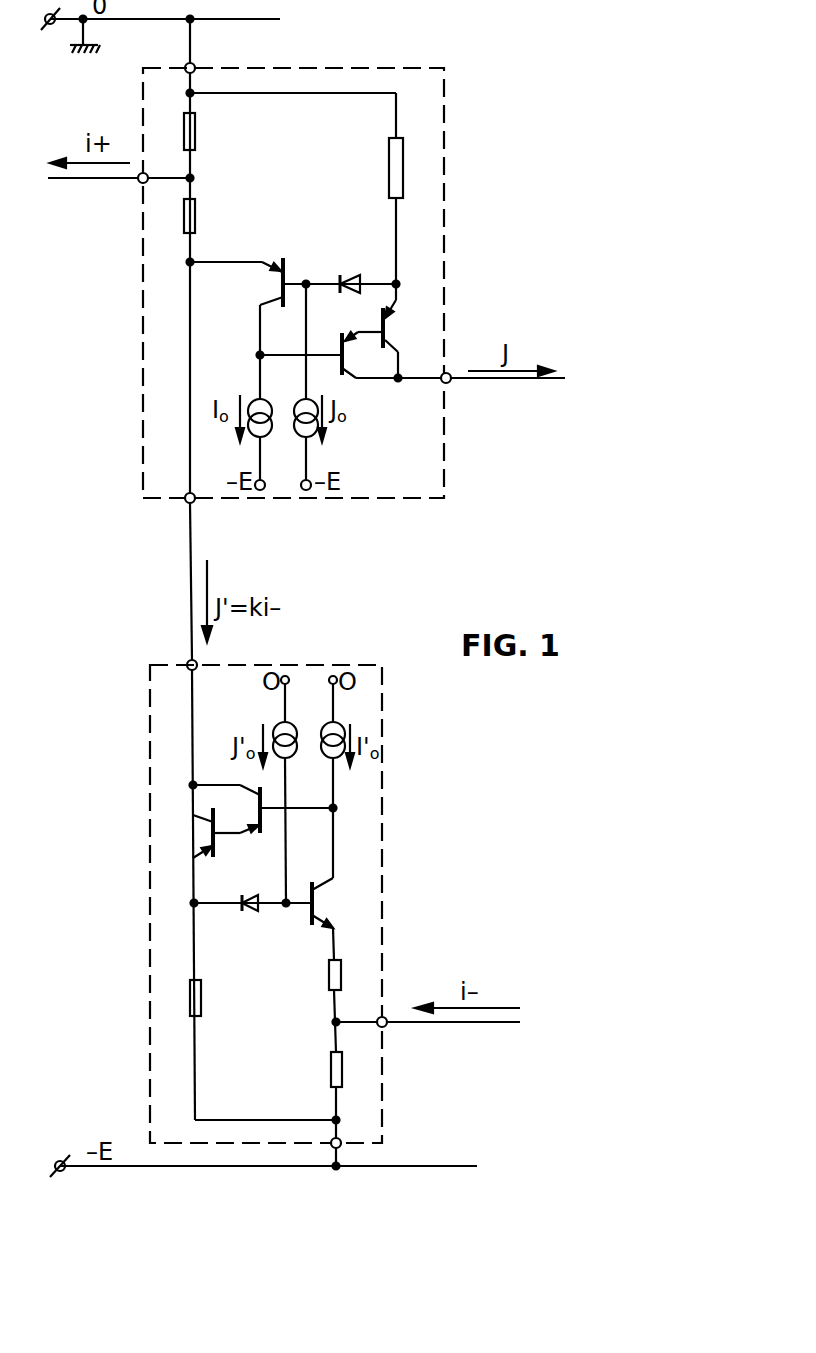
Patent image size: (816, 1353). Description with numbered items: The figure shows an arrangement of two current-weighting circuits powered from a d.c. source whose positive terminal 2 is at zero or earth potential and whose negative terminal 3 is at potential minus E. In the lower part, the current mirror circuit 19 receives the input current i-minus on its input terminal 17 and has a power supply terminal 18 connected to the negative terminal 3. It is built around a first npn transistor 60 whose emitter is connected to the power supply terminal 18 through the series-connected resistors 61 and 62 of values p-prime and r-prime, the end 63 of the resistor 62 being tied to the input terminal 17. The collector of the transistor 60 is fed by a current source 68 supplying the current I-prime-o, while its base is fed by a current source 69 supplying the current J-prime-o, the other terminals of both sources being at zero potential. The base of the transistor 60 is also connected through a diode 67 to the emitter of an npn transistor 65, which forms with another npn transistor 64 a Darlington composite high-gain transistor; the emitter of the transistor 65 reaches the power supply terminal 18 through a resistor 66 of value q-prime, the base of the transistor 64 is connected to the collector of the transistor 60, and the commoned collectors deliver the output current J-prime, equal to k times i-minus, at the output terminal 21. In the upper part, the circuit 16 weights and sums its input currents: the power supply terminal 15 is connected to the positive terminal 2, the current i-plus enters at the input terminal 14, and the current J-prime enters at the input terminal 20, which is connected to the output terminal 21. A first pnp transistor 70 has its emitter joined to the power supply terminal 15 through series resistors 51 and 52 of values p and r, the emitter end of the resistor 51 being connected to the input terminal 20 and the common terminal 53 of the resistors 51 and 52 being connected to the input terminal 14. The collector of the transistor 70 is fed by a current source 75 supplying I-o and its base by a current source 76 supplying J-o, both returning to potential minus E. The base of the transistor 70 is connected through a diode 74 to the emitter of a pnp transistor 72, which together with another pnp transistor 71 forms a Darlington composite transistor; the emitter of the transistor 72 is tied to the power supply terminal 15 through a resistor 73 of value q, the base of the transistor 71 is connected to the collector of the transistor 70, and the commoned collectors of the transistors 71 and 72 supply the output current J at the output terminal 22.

The positive terminal 2 is at (56, 28).
The negative terminal 3 is at (64, 1134).
The input terminal 14 is at (140, 183).
The power supply terminal 15 is at (194, 64).
The circuit 16 is at (318, 68).
The input terminal 17 is at (386, 1028).
The power supply terminal 18 is at (342, 1150).
The current mirror circuit 19 is at (316, 665).
The input terminal 20 is at (186, 503).
The output terminal 21 is at (186, 660).
The output terminal 22 is at (448, 384).
The resistor 51 is at (183, 218).
The resistor 52 is at (183, 135).
The terminal 53 is at (193, 177).
The npn transistor 60 is at (322, 904).
The resistor 61 is at (341, 990).
The resistor 62 is at (341, 1060).
The end of the resistor 63 is at (332, 1026).
The npn transistor 64 is at (256, 815).
The npn transistor 65 is at (210, 833).
The resistor 66 is at (180, 1000).
The diode 67 is at (247, 911).
The current source 68 is at (345, 722).
The current source 69 is at (274, 722).
The pnp transistor 70 is at (272, 290).
The pnp transistor 71 is at (348, 362).
The pnp transistor 72 is at (388, 332).
The resistor 73 is at (403, 175).
The diode 74 is at (350, 272).
The current source 75 is at (254, 432).
The current source 76 is at (312, 432).